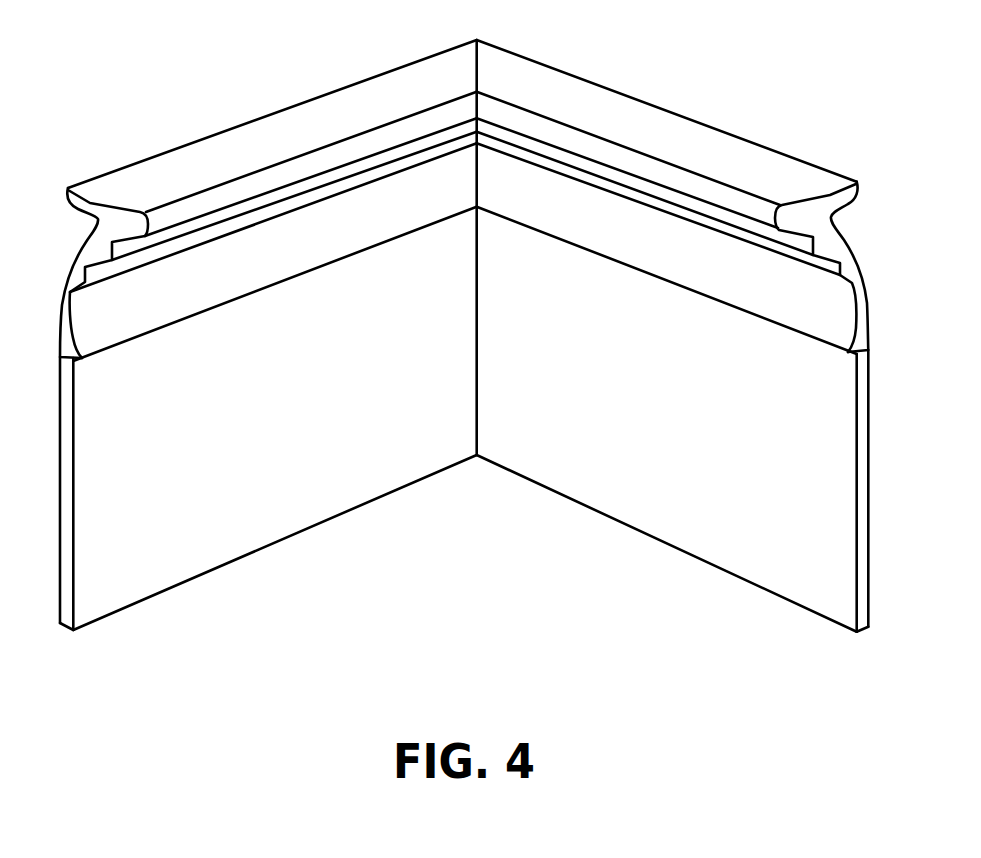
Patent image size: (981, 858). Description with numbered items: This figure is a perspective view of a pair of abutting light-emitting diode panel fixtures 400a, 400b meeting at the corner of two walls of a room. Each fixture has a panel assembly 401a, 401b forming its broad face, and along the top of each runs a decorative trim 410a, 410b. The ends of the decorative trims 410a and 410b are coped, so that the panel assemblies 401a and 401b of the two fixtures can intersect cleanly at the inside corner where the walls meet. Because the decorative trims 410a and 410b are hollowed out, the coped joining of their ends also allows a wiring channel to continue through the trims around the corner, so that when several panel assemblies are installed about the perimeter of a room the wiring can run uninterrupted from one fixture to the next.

The light-emitting diode panel fixture 400a is at (268, 339).
The light-emitting diode panel fixture 400b is at (673, 339).
The panel assembly 401a is at (340, 414).
The panel assembly 401b is at (527, 635).
The decorative trim 410a is at (285, 135).
The decorative trim 410b is at (662, 125).